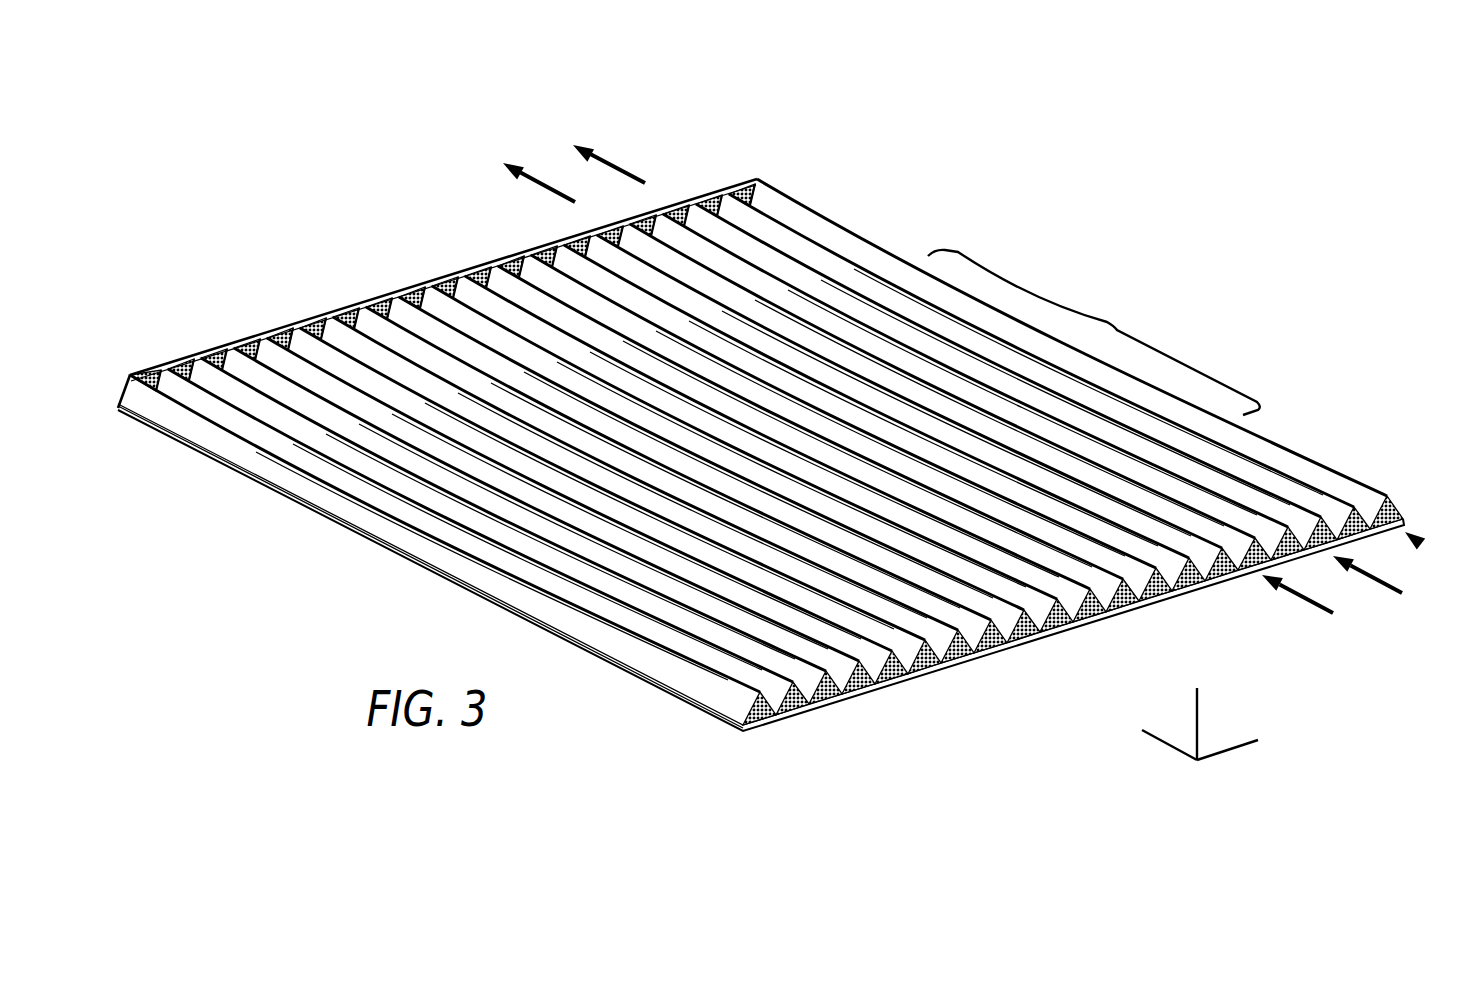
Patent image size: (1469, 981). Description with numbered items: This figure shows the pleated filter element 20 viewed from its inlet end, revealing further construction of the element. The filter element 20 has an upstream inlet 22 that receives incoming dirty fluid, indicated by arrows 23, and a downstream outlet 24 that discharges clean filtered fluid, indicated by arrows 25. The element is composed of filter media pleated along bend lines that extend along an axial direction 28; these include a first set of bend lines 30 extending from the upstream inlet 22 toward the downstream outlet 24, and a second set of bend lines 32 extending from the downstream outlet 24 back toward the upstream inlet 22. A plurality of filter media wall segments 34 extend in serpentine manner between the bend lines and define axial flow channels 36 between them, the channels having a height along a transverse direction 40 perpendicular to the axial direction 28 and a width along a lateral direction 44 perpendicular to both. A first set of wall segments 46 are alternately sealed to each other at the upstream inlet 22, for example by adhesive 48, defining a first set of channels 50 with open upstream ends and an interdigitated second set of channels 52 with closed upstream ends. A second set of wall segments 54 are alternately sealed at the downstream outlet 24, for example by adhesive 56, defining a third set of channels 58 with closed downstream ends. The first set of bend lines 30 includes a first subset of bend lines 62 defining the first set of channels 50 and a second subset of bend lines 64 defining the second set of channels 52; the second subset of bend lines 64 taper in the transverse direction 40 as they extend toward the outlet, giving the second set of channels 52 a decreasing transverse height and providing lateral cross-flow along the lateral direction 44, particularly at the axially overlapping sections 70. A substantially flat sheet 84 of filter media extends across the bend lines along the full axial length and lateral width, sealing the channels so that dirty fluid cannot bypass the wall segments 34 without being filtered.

The filter element 20 is at (911, 151).
The upstream inlet 22 is at (1421, 544).
The arrows (incoming dirty fluid) 23 is at (1313, 602).
The downstream outlet 24 is at (688, 148).
The arrows (clean filtered fluid) 25 is at (598, 157).
The axial direction 28 is at (1157, 737).
The first set of bend lines 30 is at (753, 660).
The second set of bend lines 32 is at (248, 445).
The filter media wall segments 34 is at (635, 652).
The axial flow channels 36 is at (823, 700).
The transverse direction 40 is at (1200, 722).
The lateral direction 44 is at (1232, 743).
The first set of wall segments 46 is at (867, 692).
The adhesive 48 is at (882, 660).
The first set of channels 50 is at (960, 664).
The second set of channels 52 is at (1038, 643).
The second set of wall segments 54 is at (290, 333).
The adhesive 56 is at (340, 333).
The third set of channels 58 is at (433, 297).
The first subset of bend lines 62 is at (1080, 603).
The second subset of bend lines 64 is at (1132, 570).
The axially overlapping sections 70 is at (1118, 330).
The substantially flat sheet 84 is at (747, 723).